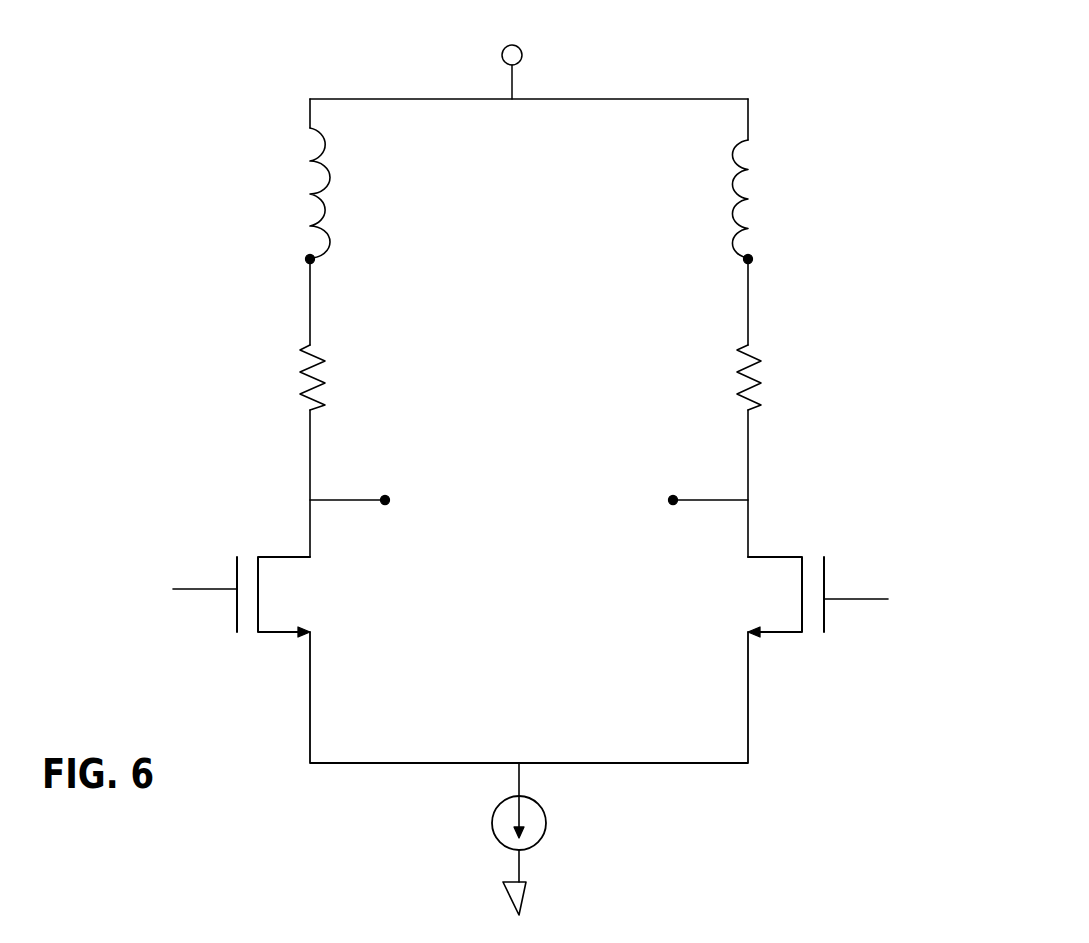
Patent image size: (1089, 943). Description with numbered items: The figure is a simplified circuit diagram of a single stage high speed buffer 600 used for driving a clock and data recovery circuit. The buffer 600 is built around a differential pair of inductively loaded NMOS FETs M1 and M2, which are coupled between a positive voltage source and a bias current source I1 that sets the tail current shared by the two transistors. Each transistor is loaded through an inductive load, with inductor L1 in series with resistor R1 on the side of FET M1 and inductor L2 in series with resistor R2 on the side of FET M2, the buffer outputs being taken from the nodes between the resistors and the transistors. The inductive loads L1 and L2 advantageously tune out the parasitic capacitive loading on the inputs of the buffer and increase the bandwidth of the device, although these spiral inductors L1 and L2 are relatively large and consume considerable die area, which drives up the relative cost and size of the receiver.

The single stage high speed buffer 600 is at (646, 70).
The inductive load L1 is at (279, 181).
The inductive load L2 is at (773, 181).
The resistor R1 is at (281, 377).
The resistor R2 is at (778, 377).
The NMOS FET M1 is at (252, 597).
The NMOS FET M2 is at (815, 597).
The bias current source I1 is at (541, 839).